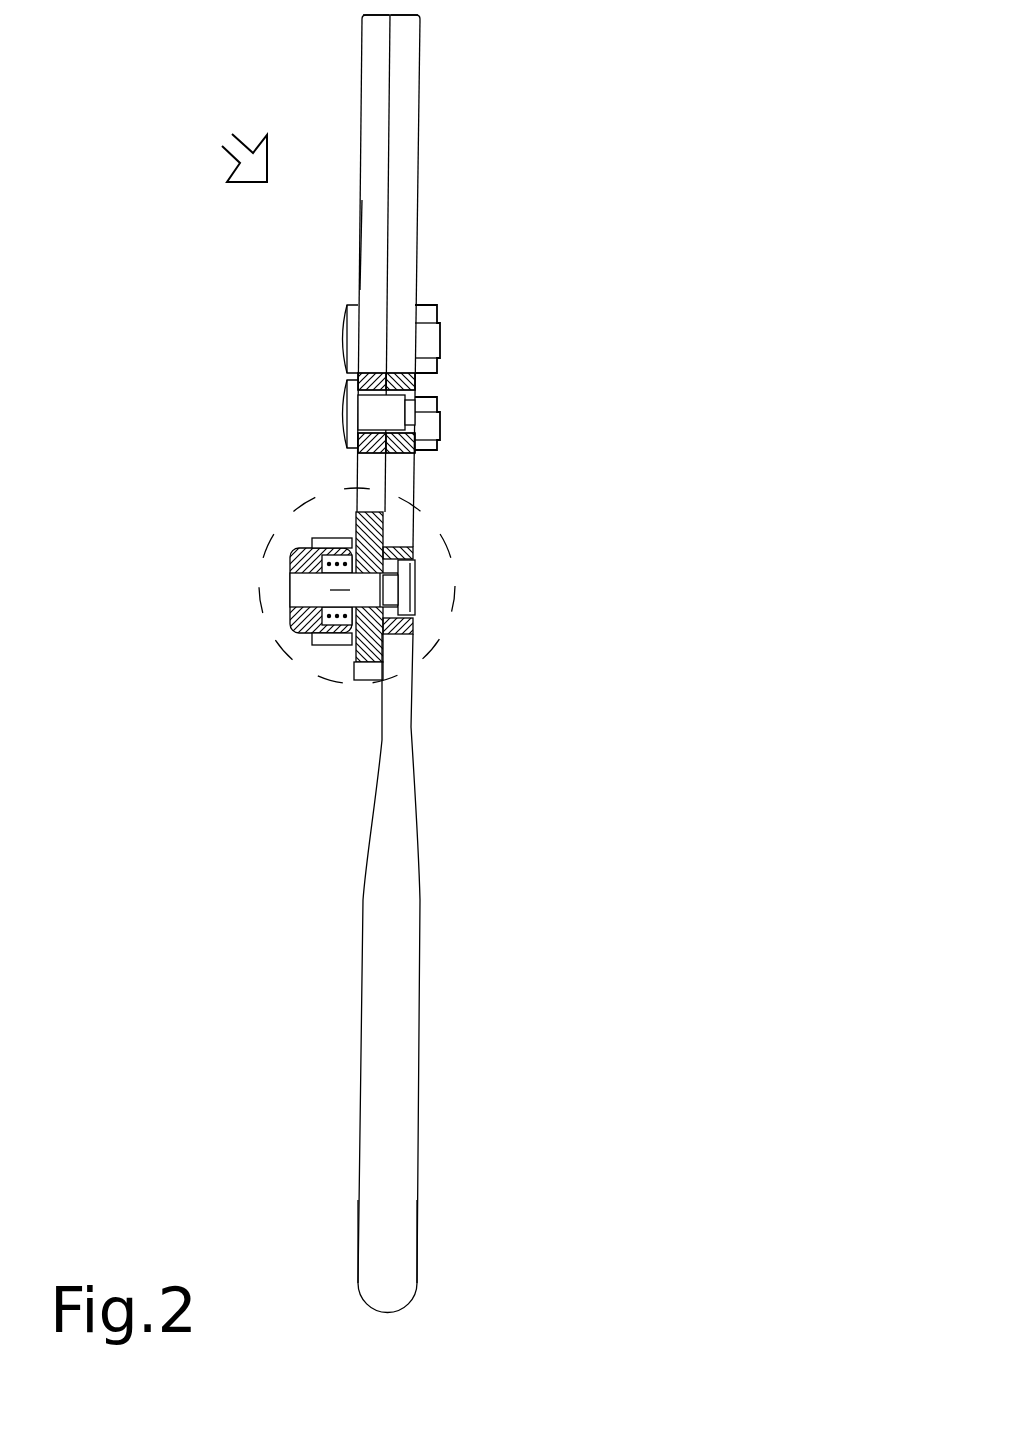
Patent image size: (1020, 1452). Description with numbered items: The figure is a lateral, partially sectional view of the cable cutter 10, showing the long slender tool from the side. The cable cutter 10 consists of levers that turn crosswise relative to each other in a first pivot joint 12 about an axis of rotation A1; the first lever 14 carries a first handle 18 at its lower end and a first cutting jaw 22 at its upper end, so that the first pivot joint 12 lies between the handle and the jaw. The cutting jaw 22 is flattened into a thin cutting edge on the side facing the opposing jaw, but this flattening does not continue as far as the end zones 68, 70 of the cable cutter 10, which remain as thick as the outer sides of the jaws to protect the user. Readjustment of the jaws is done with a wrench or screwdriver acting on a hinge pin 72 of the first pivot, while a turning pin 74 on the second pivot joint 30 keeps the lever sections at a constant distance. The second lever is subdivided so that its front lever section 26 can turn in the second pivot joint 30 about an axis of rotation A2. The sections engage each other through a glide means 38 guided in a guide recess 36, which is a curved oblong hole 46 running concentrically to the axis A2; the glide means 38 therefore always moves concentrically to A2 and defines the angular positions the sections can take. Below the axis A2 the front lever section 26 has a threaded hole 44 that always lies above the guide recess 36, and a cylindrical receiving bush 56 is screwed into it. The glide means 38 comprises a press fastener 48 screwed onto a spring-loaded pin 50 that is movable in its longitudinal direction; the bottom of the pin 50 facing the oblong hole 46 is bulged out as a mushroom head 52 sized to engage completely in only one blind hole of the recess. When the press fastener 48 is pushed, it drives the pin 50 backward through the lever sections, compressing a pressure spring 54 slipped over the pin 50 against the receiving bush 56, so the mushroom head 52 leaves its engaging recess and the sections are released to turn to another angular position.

The cable cutter 10 is at (225, 145).
The first pivot joint 12 is at (443, 316).
The first lever 14 is at (395, 918).
The first handle 18 is at (395, 1210).
The first cutting jaw 22 is at (405, 158).
The front lever section 26 is at (358, 243).
The second pivot joint 30 is at (443, 443).
The guide recess 36 is at (559, 626).
The oblong hole 46 is at (413, 618).
The glide means 38 is at (278, 590).
The threaded hole 44 is at (355, 653).
The press fastener 48 is at (215, 586).
The spring-loaded pin 50 is at (385, 590).
The mushroom head 52 is at (413, 554).
The pressure spring 54 is at (290, 623).
The cylindrical receiving bush 56 is at (228, 592).
The end zone 68 is at (414, 32).
The end zone 70 is at (380, 29).
The hinge pin 72 is at (345, 312).
The turning pin 74 is at (350, 442).
The axis of rotation A1 is at (453, 340).
The axis of rotation A2 is at (333, 414).